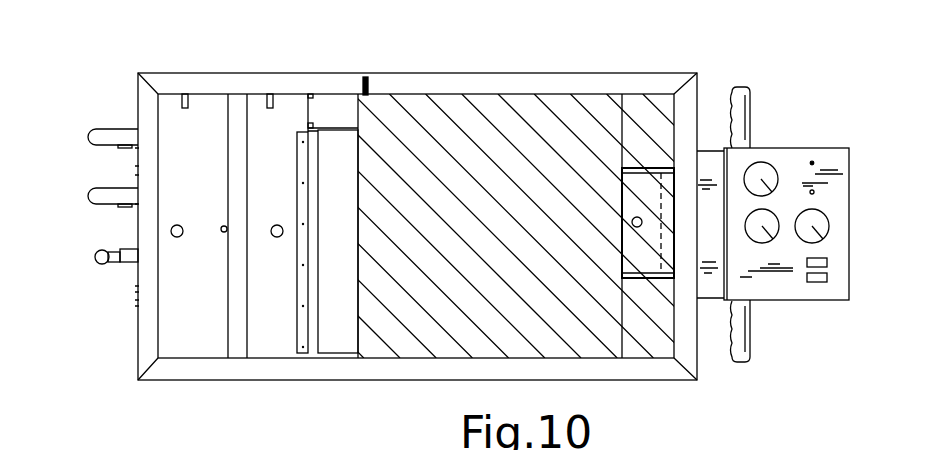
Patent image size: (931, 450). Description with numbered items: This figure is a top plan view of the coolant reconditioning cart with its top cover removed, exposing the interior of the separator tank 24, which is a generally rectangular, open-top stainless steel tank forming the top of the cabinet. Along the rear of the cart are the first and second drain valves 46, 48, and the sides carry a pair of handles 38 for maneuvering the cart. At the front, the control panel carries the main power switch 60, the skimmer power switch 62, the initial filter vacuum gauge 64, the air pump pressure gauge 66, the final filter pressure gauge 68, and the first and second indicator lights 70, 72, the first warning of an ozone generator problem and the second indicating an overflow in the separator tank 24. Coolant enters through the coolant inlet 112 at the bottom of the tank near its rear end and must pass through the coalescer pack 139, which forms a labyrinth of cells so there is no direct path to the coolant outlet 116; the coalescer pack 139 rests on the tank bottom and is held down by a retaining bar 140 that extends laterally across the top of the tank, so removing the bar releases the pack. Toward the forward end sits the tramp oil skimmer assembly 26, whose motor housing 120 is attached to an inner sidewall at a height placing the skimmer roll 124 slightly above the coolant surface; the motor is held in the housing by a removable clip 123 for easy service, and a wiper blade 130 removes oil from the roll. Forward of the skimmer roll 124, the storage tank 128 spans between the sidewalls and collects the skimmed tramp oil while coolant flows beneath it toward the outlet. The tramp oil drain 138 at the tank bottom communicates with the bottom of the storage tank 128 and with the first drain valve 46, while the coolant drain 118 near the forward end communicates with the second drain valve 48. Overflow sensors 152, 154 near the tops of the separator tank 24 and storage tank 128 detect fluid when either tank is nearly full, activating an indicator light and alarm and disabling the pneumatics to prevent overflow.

The separator tank 24 is at (502, 96).
The tramp oil skimmer assembly 26 is at (366, 78).
The handles 38 is at (741, 84).
The first drain valve 46 is at (124, 133).
The second drain valve 48 is at (124, 188).
The main power switch 60 is at (810, 282).
The skimmer power switch 62 is at (826, 260).
The initial filter vacuum gauge 64 is at (828, 226).
The air pump pressure gauge 66 is at (771, 163).
The final filter pressure gauge 68 is at (777, 222).
The first indicator light 70 is at (814, 192).
The second indicator light 72 is at (813, 163).
The coolant inlet 112 is at (640, 227).
The coolant outlet 116 is at (178, 238).
The coolant drain 118 is at (224, 232).
The motor housing 120 is at (308, 118).
The removable clip 123 is at (275, 272).
The skimmer roll 124 is at (362, 336).
The storage tank 128 is at (247, 150).
The wiper blade 130 is at (320, 156).
The tramp oil drain 138 is at (277, 238).
The coalescer pack 139 is at (581, 107).
The retaining bar 140 is at (623, 336).
The overflow sensor 152 is at (178, 98).
The overflow sensor 154 is at (268, 98).